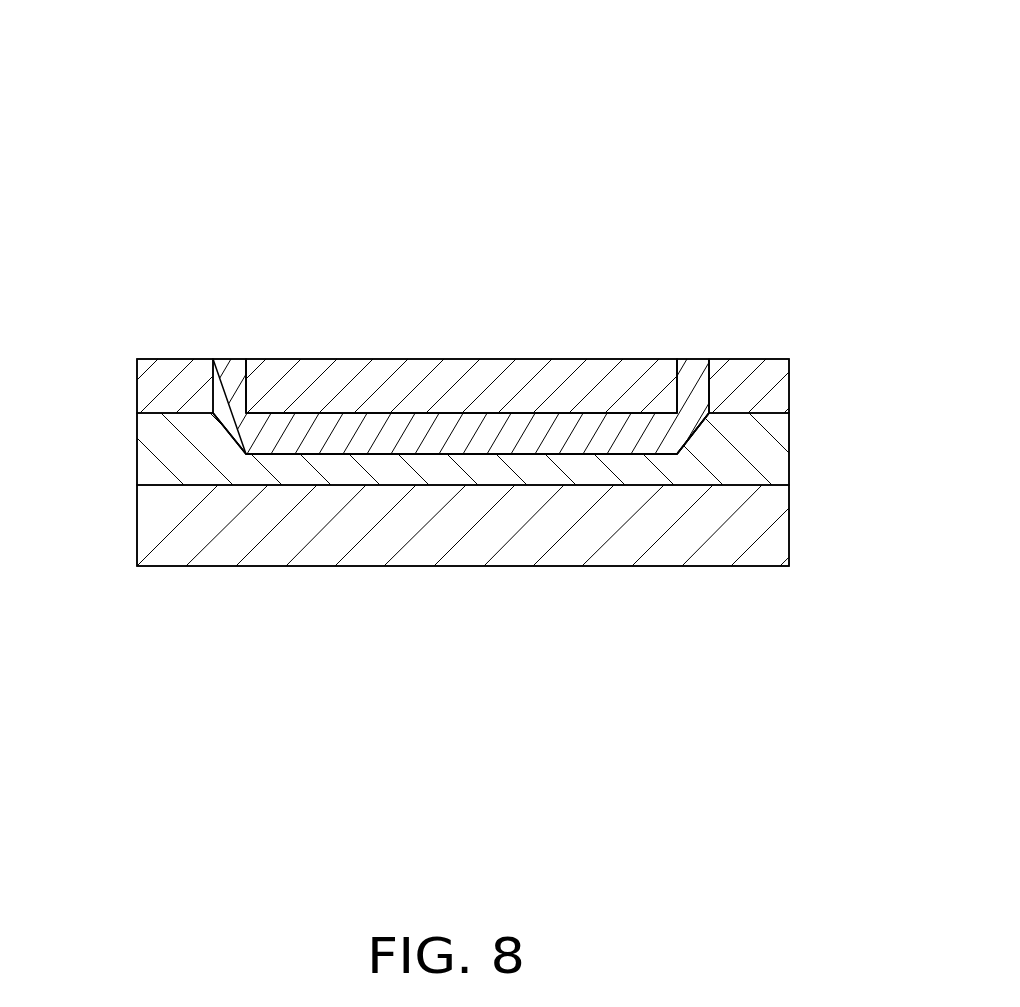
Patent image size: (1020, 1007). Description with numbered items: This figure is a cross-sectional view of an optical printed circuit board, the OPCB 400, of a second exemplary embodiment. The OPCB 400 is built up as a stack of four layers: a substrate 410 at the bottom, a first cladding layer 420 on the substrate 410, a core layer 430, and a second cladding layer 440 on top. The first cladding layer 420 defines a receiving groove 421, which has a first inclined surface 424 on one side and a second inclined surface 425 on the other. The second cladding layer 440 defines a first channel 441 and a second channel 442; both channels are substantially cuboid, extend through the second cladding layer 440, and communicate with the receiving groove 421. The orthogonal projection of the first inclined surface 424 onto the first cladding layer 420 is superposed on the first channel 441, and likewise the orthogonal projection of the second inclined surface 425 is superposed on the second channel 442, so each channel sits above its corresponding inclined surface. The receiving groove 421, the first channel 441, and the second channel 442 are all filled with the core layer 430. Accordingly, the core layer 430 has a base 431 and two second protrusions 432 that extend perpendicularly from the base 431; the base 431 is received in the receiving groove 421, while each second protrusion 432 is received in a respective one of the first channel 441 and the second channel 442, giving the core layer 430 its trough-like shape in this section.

The OPCB 400 is at (433, 112).
The substrate 410 is at (177, 540).
The first cladding layer 420 is at (474, 553).
The receiving groove 421 is at (715, 642).
The first inclined surface 424 is at (238, 443).
The second inclined surface 425 is at (693, 438).
The core layer 430 is at (455, 338).
The base 431 is at (472, 427).
The second protrusion 432 is at (695, 268).
The second cladding layer 440 is at (498, 335).
The first channel 441 is at (213, 378).
The second channel 442 is at (712, 385).